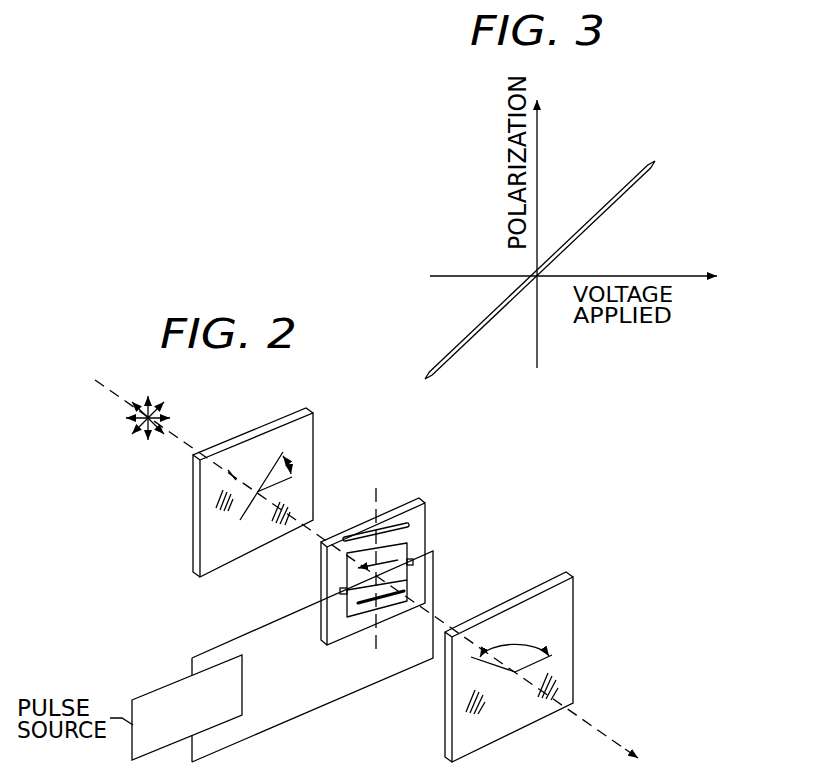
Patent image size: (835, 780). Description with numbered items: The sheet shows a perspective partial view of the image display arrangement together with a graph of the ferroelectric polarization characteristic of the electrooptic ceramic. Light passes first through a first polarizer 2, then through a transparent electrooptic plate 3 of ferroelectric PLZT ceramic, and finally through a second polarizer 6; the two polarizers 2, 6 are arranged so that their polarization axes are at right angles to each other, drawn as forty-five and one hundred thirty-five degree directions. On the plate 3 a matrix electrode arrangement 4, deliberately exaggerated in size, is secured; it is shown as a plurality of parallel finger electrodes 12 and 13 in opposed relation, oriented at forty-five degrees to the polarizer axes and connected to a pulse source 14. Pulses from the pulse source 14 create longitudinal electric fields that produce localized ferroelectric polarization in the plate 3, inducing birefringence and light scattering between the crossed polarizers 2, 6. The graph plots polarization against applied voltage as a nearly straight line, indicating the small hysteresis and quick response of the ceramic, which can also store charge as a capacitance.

The first polarizer 2 is at (311, 407).
The transparent electrooptic plate 3 is at (425, 502).
The matrix electrode arrangement 4 is at (352, 617).
The second polarizer 6 is at (575, 578).
The finger electrode 12 is at (343, 566).
The finger electrode 13 is at (413, 550).
The pulse source 14 is at (170, 683).